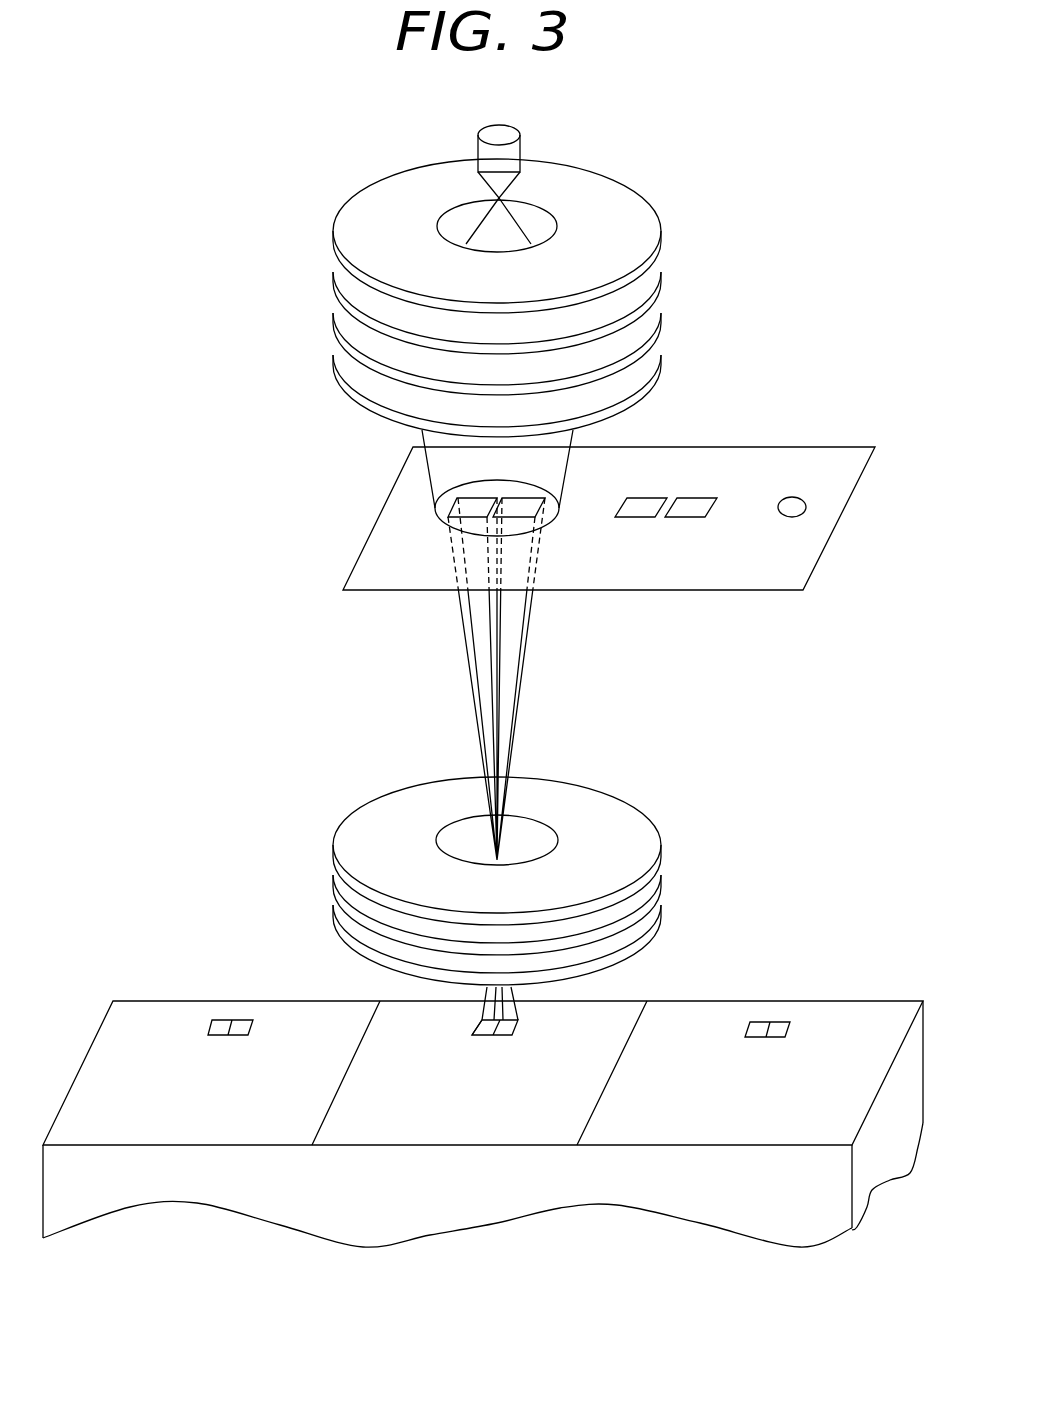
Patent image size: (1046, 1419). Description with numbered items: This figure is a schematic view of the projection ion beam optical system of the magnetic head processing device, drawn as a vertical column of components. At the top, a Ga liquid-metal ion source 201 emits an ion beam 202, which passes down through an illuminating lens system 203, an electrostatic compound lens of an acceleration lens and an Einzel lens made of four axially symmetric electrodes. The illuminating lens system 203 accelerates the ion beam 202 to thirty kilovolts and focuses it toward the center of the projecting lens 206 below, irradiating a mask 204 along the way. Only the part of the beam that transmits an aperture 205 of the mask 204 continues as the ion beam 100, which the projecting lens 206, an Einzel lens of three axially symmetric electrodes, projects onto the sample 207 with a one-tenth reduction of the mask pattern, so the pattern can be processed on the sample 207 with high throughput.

The ion beam 100 is at (507, 718).
The Ga liquid-metal ion source 201 is at (522, 143).
The ion beam 202 is at (558, 472).
The illuminating lens system 203 is at (682, 370).
The mask 204 is at (770, 457).
The aperture 205 is at (518, 498).
The projecting lens 206 is at (672, 925).
The sample 207 is at (403, 1013).